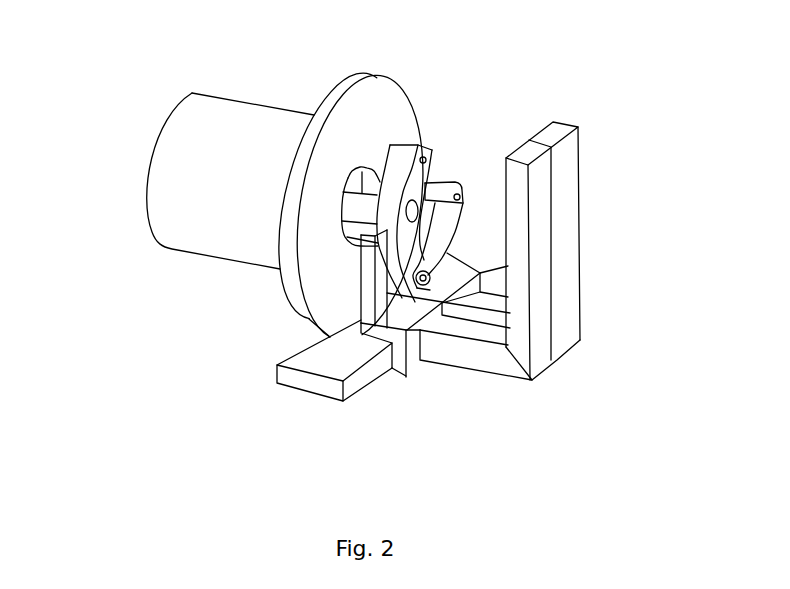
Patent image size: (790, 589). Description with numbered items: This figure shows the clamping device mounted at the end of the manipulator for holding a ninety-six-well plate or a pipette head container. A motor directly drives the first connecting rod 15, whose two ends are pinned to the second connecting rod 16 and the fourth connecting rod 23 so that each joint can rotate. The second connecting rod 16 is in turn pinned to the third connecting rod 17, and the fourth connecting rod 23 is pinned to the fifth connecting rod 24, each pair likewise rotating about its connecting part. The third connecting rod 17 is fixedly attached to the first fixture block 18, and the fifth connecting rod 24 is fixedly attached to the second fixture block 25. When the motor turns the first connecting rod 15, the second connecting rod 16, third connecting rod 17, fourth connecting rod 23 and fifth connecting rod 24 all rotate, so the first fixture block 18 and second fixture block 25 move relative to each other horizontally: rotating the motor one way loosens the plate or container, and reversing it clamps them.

The first connecting rod 15 is at (424, 165).
The second connecting rod 16 is at (362, 179).
The third connecting rod 17 is at (362, 280).
The first fixture block 18 is at (542, 288).
The fourth connecting rod 23 is at (443, 232).
The fifth connecting rod 24 is at (433, 240).
The second fixture block 25 is at (563, 307).